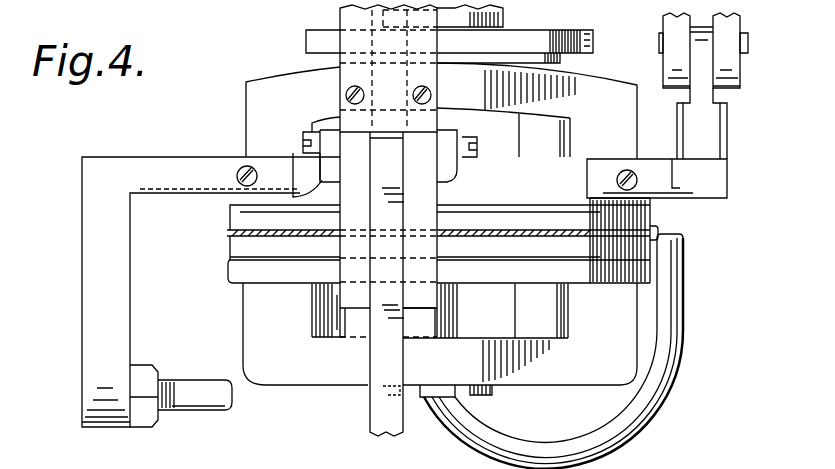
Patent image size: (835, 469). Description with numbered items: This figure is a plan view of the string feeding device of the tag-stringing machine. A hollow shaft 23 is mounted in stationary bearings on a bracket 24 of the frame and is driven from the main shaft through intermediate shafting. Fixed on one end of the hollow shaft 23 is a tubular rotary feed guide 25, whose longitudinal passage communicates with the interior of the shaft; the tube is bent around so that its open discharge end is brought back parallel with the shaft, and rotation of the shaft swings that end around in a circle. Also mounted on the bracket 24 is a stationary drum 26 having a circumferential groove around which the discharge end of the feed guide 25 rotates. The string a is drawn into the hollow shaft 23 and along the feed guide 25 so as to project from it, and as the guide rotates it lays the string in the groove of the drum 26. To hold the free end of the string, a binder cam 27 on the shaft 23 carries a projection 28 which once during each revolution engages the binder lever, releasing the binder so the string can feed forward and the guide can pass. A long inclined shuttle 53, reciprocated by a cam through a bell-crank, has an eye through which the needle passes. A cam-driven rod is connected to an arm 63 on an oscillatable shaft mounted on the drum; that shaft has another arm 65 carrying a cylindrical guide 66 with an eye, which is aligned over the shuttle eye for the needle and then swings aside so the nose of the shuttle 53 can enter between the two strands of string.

The bracket 24 is at (258, 130).
The arm 65 is at (95, 291).
The cylindrical guide 66 is at (190, 383).
The stationary drum 26 is at (248, 267).
The string a is at (232, 233).
The hollow shaft 23 is at (452, 315).
The shuttle 53 is at (375, 407).
The projection 28 is at (593, 48).
The binder cam 27 is at (509, 44).
The arm 63 is at (707, 162).
The tubular rotary feed guide 25 is at (670, 342).